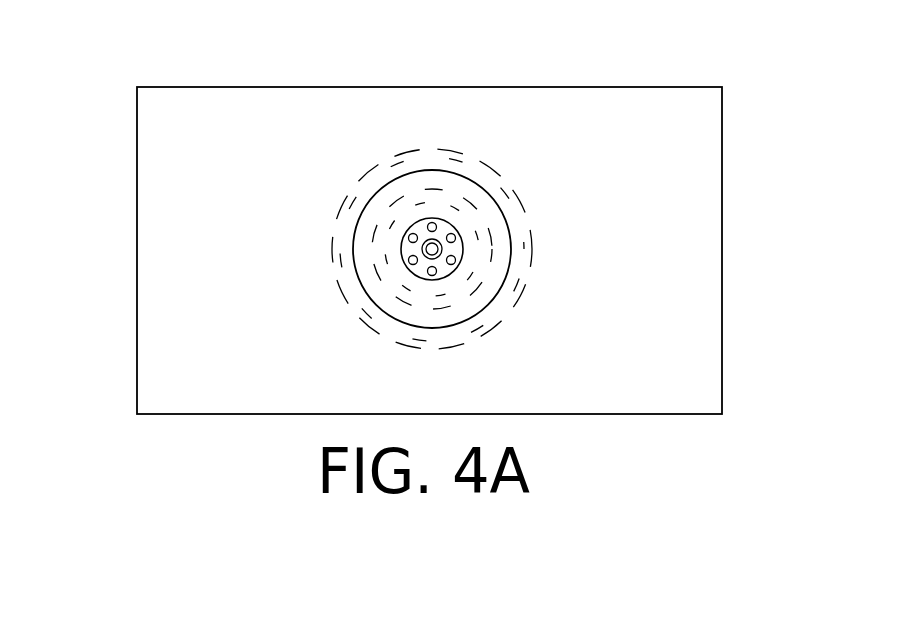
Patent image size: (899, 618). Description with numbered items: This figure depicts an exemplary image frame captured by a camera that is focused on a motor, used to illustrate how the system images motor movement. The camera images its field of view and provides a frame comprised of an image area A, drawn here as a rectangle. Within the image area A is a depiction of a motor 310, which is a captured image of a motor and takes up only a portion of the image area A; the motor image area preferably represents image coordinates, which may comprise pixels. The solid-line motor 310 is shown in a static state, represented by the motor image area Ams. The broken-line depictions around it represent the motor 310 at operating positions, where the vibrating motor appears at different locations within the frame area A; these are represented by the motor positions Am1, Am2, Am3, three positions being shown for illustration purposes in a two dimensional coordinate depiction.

The motor 310 is at (366, 200).
The image area A is at (722, 183).
The motor position Am1 is at (537, 238).
The motor position Am2 is at (337, 275).
The motor position Am3 is at (440, 143).
The motor image area Ams is at (353, 250).